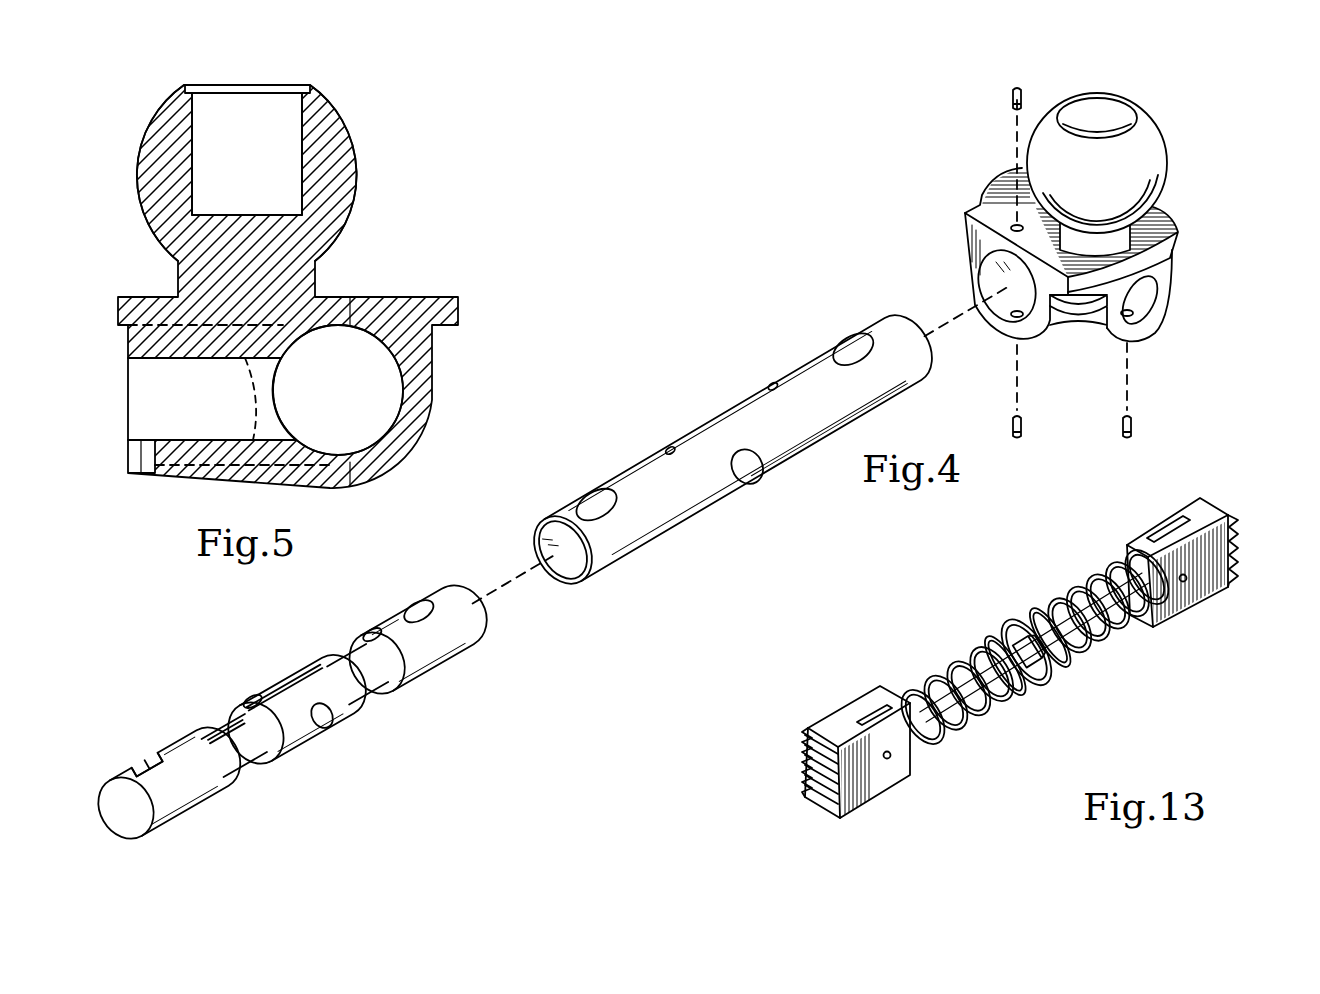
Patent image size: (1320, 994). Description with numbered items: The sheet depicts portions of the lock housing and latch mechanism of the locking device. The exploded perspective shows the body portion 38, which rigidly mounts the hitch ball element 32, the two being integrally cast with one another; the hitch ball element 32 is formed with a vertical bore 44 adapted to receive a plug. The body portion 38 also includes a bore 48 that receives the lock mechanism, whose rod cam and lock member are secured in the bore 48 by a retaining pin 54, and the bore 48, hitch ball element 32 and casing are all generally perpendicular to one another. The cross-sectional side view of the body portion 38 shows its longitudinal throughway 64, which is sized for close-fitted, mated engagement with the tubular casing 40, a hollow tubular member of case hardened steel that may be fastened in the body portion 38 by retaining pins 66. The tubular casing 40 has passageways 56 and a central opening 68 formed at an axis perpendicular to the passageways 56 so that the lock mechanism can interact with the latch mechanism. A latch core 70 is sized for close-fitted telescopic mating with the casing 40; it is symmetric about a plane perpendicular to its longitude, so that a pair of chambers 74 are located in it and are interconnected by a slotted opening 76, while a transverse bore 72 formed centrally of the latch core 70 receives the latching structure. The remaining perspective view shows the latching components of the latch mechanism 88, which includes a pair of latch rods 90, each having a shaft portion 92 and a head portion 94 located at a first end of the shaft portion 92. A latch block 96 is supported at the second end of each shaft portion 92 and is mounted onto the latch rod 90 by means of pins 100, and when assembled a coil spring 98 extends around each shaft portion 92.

In FIG. 5, the hitch ball element 32 is at (352, 139).
In FIG. 4, the hitch ball element 32 is at (1152, 148).
In FIG. 5, the body portion 38 is at (416, 251).
In FIG. 4, the body portion 38 is at (999, 136).
In FIG. 4, the tubular casing 40 is at (711, 388).
In FIG. 5, the vertical bore 44 is at (265, 117).
In FIG. 4, the vertical bore 44 is at (1103, 121).
In FIG. 5, the bore 48 is at (157, 390).
In FIG. 4, the bore 48 is at (1138, 307).
In FIG. 4, the retaining pin 54 is at (1133, 418).
In FIG. 4, the passageways 56 is at (584, 495).
In FIG. 5, the longitudinal throughway 64 is at (345, 400).
In FIG. 4, the longitudinal throughway 64 is at (992, 268).
In FIG. 4, the retaining pins 66 is at (1010, 86).
In FIG. 4, the central opening 68 is at (758, 489).
In FIG. 4, the latch core 70 is at (249, 650).
In FIG. 4, the transverse bore 72 is at (334, 727).
In FIG. 4, the chambers 74 is at (355, 630).
In FIG. 4, the slotted opening 76 is at (308, 662).
In FIG. 13, the latch mechanism 88 is at (1049, 668).
In FIG. 13, the latch rods 90 is at (925, 698).
In FIG. 13, the shaft portion 92 is at (1080, 606).
In FIG. 13, the head portion 94 is at (1008, 634).
In FIG. 13, the latch block 96 is at (862, 800).
In FIG. 13, the coil spring 98 is at (1101, 633).
In FIG. 13, the pins 100 is at (893, 758).